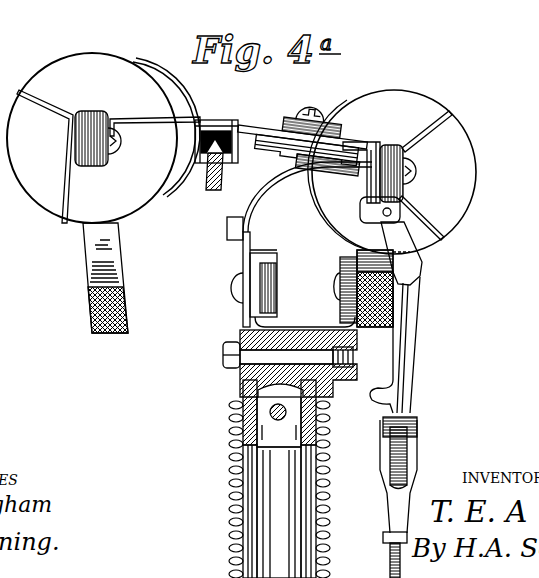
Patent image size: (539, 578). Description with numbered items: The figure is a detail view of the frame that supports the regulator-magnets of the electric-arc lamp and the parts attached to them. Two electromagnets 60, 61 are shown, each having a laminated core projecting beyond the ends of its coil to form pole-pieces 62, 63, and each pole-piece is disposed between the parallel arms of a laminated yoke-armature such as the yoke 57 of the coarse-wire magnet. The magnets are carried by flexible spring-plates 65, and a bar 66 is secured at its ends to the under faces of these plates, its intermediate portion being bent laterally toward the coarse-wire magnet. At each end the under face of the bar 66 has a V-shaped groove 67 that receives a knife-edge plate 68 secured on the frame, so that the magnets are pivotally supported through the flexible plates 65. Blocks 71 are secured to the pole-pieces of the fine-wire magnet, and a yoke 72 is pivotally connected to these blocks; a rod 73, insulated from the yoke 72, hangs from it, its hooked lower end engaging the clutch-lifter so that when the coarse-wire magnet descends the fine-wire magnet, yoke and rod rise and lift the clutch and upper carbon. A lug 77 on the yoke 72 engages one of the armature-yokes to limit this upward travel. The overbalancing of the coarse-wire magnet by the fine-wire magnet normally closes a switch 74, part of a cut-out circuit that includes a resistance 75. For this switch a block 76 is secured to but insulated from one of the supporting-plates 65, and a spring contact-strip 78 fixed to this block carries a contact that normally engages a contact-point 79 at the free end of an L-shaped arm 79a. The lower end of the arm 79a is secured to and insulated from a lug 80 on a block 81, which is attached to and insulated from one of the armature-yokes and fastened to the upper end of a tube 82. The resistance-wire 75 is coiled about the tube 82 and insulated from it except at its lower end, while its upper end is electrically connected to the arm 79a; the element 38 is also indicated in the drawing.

The electromagnet 60 is at (90, 55).
The electromagnet 61 is at (394, 163).
The pole-piece 62 is at (96, 109).
The pole-piece 63 is at (393, 147).
The spring-plate 65 is at (304, 123).
The bar 66 is at (185, 168).
The V-shaped groove 67 is at (216, 122).
The knife-edge plate 68 is at (207, 185).
The block 71 is at (371, 206).
The yoke 72 is at (413, 272).
The rod 73 is at (389, 553).
The switch 74 is at (346, 153).
The resistance-wire 75 is at (231, 479).
The block 76 is at (276, 150).
The lug 77 is at (389, 397).
The spring contact-strip 78 is at (325, 190).
The contact-point 79 is at (352, 168).
The L-shaped arm 79a is at (258, 190).
The lug 80 is at (267, 251).
The block 81 is at (290, 356).
The tube 82 is at (279, 487).
The rod 38 is at (394, 333).
The yoke 57 is at (129, 313).